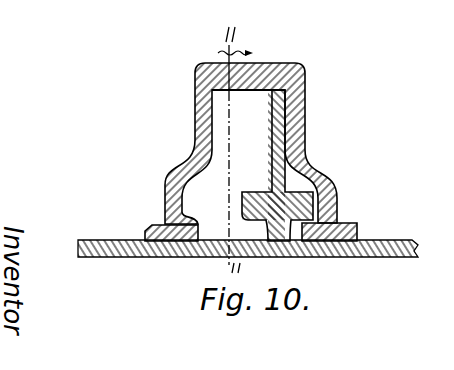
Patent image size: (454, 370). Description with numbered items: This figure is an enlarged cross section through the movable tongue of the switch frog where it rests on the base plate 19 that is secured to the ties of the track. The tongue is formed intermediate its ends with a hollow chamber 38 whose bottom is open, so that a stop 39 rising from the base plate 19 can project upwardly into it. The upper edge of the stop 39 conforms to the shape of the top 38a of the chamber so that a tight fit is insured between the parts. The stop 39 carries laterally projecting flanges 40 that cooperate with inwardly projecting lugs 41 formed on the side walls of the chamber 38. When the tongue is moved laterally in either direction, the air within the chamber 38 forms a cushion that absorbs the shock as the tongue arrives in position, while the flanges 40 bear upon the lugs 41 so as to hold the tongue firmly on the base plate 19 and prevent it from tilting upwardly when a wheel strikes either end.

The base plate 19 is at (396, 240).
The hollow chamber 38 is at (200, 187).
The top of chamber 38a is at (216, 91).
The stop 39 is at (273, 147).
The laterally projecting flange 40 is at (240, 204).
The inwardly projecting lug 41 is at (166, 218).